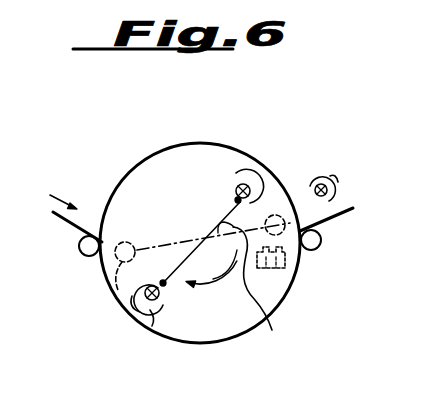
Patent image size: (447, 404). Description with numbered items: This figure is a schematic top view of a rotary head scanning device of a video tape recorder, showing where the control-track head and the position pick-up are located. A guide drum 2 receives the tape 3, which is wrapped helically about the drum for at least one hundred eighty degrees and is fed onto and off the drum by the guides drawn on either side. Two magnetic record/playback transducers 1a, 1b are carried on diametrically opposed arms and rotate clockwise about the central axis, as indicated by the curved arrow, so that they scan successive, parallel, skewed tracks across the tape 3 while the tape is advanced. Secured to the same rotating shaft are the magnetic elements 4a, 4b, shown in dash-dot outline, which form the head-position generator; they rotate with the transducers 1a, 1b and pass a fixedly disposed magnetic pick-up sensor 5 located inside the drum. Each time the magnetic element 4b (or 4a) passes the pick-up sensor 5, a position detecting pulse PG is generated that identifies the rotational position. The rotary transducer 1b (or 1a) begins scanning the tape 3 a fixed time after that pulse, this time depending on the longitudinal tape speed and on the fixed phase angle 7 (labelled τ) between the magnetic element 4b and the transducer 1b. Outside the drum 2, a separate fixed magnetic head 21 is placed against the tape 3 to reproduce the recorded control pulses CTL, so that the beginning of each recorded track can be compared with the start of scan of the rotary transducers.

The guide drum 2 is at (143, 158).
The tape 3 is at (64, 218).
The magnetic head 21 is at (336, 202).
The magnetic record/playback transducer 1a is at (150, 312).
The magnetic record/playback transducer 1b is at (238, 176).
The magnetic element 4a is at (116, 292).
The magnetic element 4b is at (282, 214).
The magnetic pick-up sensor 5 is at (285, 262).
The fixed phase angle τ 7 is at (259, 297).